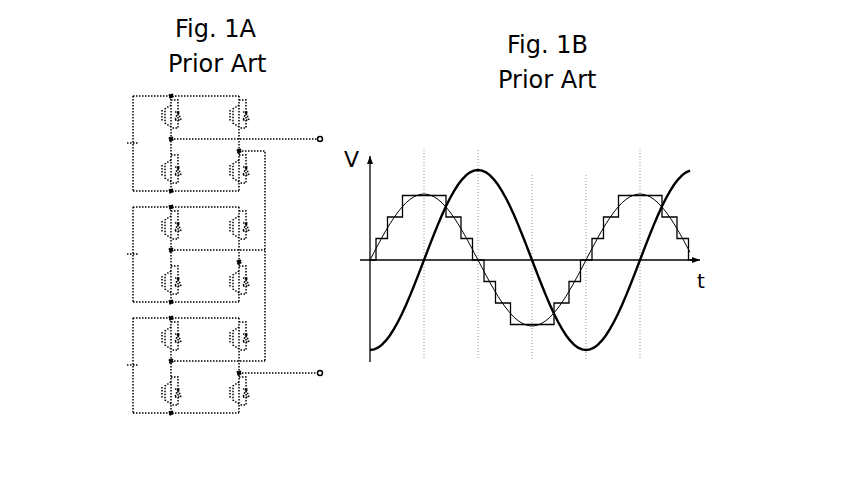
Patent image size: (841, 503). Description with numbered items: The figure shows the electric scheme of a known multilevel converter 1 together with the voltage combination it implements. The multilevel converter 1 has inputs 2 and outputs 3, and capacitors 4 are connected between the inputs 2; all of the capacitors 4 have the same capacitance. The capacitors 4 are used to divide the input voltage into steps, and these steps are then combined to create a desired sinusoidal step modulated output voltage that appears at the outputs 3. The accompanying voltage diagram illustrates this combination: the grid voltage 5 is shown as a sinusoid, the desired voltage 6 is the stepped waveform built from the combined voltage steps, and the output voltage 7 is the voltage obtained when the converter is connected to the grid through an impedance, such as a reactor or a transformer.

In FIG. 1A, the multilevel converter 1 is at (305, 102).
In FIG. 1A, the inputs 2 is at (118, 428).
In FIG. 1A, the outputs 3 is at (297, 402).
In FIG. 1A, the capacitors 4 is at (130, 368).
In FIG. 1B, the grid voltage 5 is at (688, 172).
In FIG. 1B, the desired voltage 6 is at (638, 193).
In FIG. 1B, the output voltage 7 is at (690, 222).